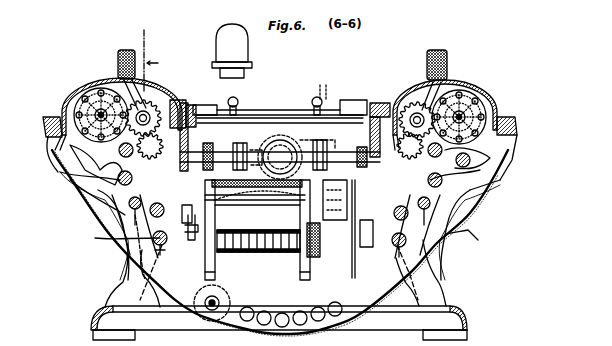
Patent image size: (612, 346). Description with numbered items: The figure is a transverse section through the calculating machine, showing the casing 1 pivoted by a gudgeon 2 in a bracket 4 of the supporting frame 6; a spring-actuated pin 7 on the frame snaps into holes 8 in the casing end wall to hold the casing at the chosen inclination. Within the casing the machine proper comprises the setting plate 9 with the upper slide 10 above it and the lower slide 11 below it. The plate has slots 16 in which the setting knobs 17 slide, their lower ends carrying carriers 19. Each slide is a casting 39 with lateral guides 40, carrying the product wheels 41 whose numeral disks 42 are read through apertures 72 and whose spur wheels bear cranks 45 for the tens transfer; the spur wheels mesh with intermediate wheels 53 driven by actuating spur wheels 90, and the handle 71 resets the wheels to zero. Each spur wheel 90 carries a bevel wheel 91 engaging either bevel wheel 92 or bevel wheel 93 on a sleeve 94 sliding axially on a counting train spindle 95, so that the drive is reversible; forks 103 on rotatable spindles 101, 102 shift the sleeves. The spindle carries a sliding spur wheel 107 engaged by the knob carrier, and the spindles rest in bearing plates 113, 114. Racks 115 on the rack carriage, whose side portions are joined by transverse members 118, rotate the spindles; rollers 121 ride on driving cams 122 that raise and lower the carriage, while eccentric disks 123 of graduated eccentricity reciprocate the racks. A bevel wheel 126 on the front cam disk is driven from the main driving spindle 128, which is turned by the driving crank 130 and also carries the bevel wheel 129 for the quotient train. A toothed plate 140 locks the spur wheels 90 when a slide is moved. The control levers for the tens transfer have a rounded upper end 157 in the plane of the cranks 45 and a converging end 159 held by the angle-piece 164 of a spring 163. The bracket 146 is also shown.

The casing 1 is at (85, 207).
The gudgeon 2 is at (282, 140).
The bracket 4 is at (127, 280).
The supporting frame 6 is at (91, 319).
The spring-actuated pin 7 is at (205, 318).
The holes 8 is at (249, 326).
The setting plate 9 is at (210, 112).
The upper slide 10 is at (80, 86).
The lower slide 11 is at (472, 85).
The slots 16 is at (262, 110).
The setting knobs 17 is at (235, 98).
The carrier 19 is at (262, 155).
The casting 39 is at (66, 99).
The lateral guides 40 is at (177, 100).
The product wheels 41 is at (482, 104).
The numeral disks 42 is at (76, 113).
The cranks 45 is at (58, 160).
The intermediate spur wheels 53 is at (190, 104).
The handle 71 is at (448, 58).
The apertures 72 is at (104, 88).
The actuating spur wheels 90 is at (120, 212).
The bevel wheel 91 is at (190, 240).
The bevel wheel 92 is at (108, 190).
The bevel wheel 93 is at (285, 149).
The sleeve 94 is at (100, 177).
The counting train spindle 95 is at (238, 190).
The rotatable spindle 101 is at (140, 270).
The rotatable spindle 102 is at (356, 258).
The fork 103 is at (124, 253).
The spur wheel 107 is at (291, 88).
The bearing plate 113 is at (292, 207).
The bearing plate 114 is at (191, 228).
The racks 115 is at (262, 188).
The transverse members 118 is at (285, 188).
The rollers 121 is at (304, 262).
The driving cams 122 is at (215, 275).
The eccentric disks 123 is at (262, 253).
The bevel wheel 126 is at (320, 255).
The main driving spindle 128 is at (325, 90).
The bevel wheel 129 is at (334, 200).
The driving crank 130 is at (240, 44).
The plate 140 is at (455, 178).
The bracket 146 is at (277, 226).
The rounded upper end 157 is at (447, 92).
The converging end 159 is at (448, 236).
The spring 163 is at (278, 265).
The angle-piece 164 is at (112, 240).